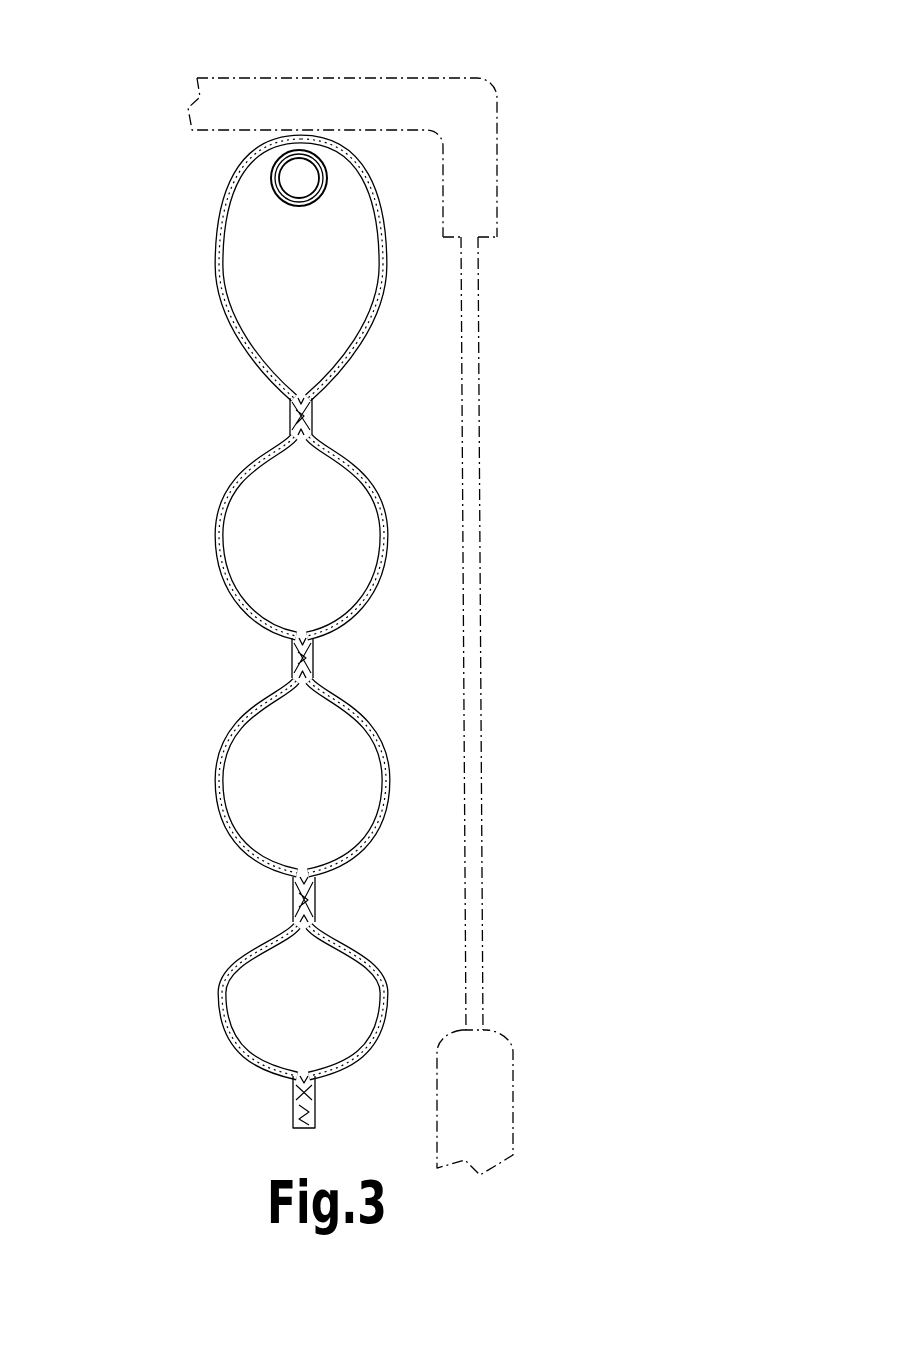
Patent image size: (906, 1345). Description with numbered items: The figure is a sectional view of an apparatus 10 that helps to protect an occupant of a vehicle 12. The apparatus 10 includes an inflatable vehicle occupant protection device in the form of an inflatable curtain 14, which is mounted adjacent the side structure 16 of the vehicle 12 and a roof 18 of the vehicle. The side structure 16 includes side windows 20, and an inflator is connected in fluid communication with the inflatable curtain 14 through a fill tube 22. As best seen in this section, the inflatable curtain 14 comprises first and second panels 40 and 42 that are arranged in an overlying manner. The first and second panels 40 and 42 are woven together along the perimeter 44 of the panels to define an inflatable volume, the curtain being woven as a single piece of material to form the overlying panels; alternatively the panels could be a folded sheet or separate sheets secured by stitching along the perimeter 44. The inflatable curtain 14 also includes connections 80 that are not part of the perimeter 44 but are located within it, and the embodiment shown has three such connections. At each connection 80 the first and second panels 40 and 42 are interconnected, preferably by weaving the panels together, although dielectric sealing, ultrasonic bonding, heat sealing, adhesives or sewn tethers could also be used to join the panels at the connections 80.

The apparatus 10 is at (238, 633).
The vehicle 12 is at (396, 589).
The inflatable curtain 14 is at (270, 268).
The side structure 16 is at (497, 153).
The roof 18 is at (313, 78).
The side windows 20 is at (473, 458).
The fill tube 22 is at (281, 196).
The first panel 40 is at (280, 536).
The second panel 42 is at (218, 533).
The perimeter 44 is at (296, 1098).
The connection 80 is at (292, 397).